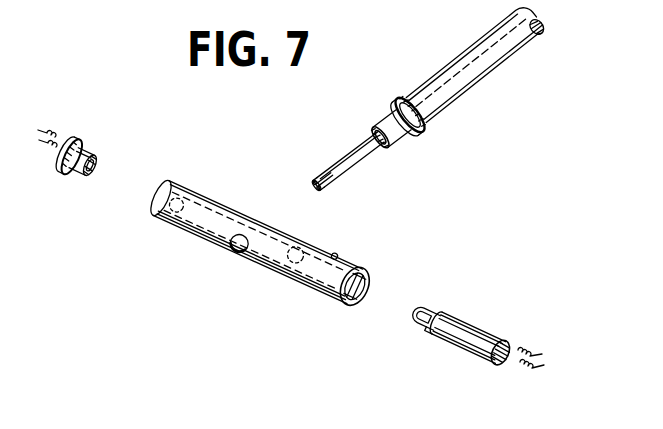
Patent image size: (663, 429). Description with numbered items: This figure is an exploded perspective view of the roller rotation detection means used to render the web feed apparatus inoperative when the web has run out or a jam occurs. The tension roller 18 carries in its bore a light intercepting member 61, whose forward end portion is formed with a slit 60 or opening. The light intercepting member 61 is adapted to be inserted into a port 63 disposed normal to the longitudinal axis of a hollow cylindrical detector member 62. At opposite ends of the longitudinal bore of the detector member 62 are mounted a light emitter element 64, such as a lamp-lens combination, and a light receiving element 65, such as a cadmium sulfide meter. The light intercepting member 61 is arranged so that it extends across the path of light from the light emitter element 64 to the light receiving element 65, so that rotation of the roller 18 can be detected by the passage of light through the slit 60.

The tension roller 18 is at (478, 82).
The slit 60 is at (331, 164).
The light intercepting member 61 is at (351, 165).
The hollow cylindrical detector member 62 is at (180, 228).
The hole 63 is at (237, 250).
The light emitter element 64 is at (467, 325).
The light receiving element 65 is at (78, 140).